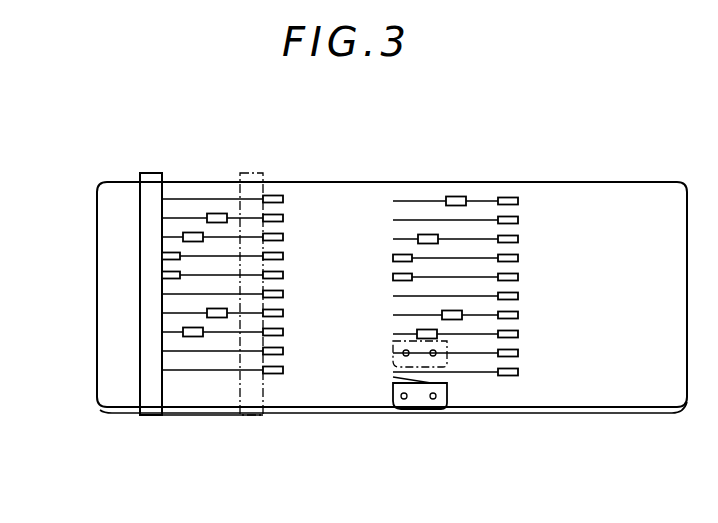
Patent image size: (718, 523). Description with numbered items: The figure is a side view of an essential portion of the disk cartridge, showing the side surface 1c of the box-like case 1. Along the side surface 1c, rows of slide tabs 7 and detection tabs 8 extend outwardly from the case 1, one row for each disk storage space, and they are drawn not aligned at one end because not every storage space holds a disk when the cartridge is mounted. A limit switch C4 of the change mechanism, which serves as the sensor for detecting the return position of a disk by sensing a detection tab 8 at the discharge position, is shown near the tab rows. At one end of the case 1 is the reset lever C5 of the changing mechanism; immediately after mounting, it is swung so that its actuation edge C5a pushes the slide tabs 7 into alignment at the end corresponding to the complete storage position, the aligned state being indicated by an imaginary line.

The case 1 is at (343, 182).
The side surface 1c is at (560, 204).
The slide tab 7 is at (273, 338).
The detection tab 8 is at (429, 234).
The limit switch C4 is at (447, 362).
The reset lever C5 is at (157, 416).
The actuation edge C5a is at (155, 183).